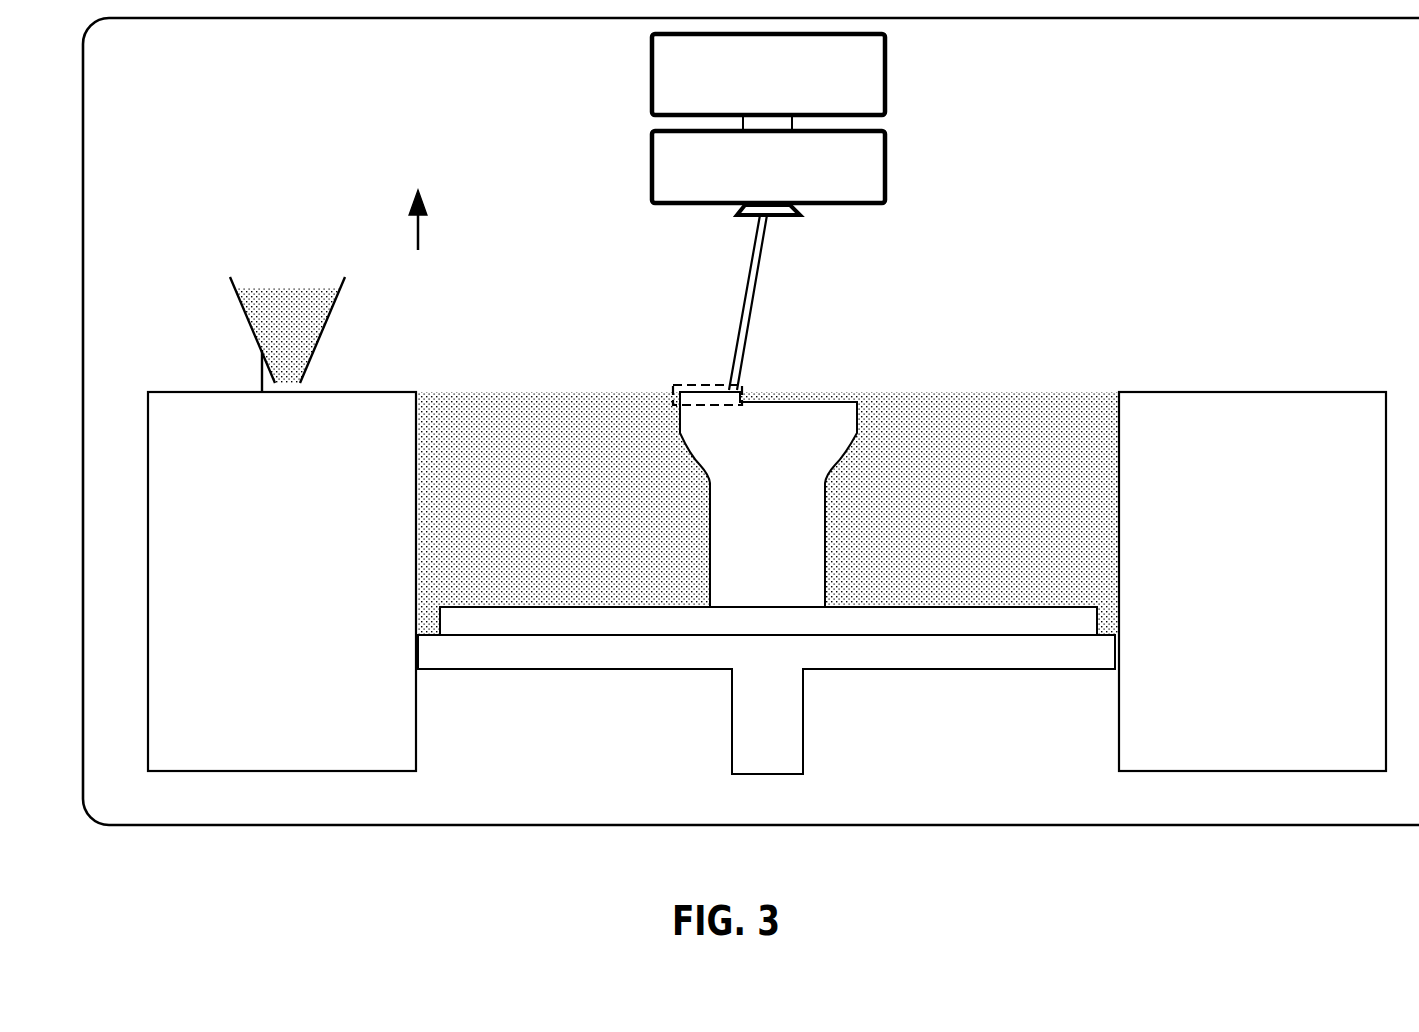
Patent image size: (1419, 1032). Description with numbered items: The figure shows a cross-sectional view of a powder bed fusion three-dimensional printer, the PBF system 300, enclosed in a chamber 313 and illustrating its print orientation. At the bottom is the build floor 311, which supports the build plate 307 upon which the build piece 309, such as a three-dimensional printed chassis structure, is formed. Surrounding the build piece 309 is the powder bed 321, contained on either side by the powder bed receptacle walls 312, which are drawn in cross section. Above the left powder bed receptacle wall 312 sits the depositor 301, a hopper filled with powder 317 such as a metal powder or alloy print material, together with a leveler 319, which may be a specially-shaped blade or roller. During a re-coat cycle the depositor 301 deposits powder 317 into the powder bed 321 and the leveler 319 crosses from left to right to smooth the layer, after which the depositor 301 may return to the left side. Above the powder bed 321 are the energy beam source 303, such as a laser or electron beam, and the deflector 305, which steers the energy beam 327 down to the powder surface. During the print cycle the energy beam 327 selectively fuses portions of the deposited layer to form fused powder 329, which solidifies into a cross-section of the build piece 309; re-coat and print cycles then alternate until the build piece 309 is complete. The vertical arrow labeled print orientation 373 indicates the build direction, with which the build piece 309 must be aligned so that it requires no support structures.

The PBF system 300 is at (1068, 836).
The depositor 301 is at (224, 296).
The energy beam source 303 is at (768, 82).
The deflector 305 is at (768, 173).
The build plate 307 is at (1057, 600).
The build piece 309 is at (857, 405).
The build floor 311 is at (863, 672).
The powder bed receptacle wall 312 is at (767, 581).
The chamber 313 is at (751, 421).
The powder 317 is at (285, 305).
The leveler 319 is at (262, 370).
The powder bed 321 is at (1057, 423).
The energy beam 327 is at (755, 243).
The fused powder 329 is at (690, 386).
The print orientation 373 is at (518, 235).